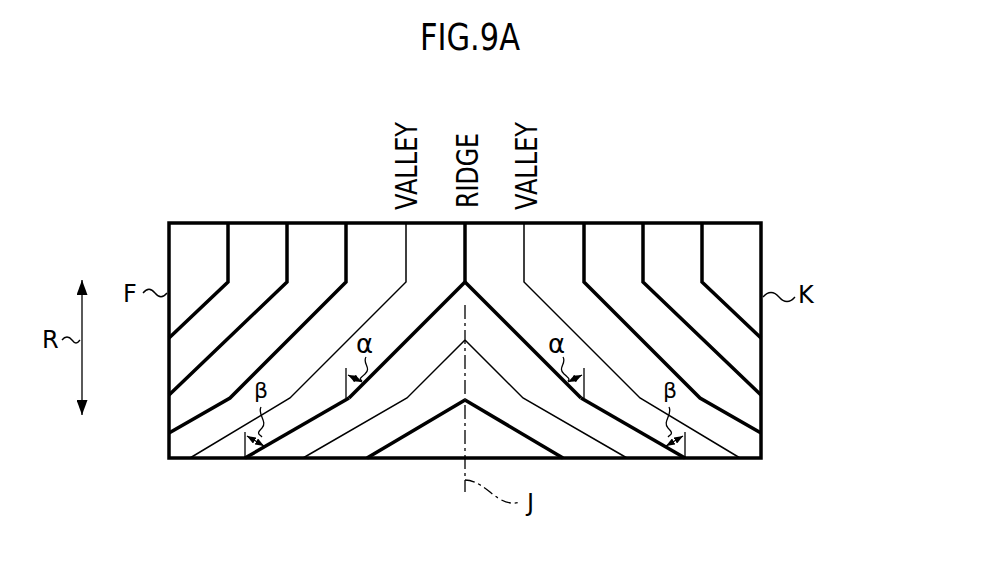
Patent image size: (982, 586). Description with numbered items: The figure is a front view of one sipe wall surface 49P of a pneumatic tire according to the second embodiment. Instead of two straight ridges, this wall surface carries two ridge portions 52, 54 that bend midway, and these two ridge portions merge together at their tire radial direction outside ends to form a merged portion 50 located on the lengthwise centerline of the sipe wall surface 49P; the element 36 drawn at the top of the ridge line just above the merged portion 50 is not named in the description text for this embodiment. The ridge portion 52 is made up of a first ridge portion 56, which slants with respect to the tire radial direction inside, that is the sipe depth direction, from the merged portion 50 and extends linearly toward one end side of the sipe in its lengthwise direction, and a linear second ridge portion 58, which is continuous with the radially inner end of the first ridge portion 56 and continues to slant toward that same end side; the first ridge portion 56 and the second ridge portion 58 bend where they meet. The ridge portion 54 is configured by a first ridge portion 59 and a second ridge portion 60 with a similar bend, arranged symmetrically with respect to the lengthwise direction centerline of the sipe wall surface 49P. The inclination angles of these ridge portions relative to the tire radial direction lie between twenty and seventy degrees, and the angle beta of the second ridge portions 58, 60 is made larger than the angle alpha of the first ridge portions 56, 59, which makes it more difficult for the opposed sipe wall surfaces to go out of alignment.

The sipe wall surface 49P is at (780, 158).
The ridge 36 is at (468, 241).
The merged portion 50 is at (470, 409).
The ridge portion 52 is at (333, 420).
The ridge portion 54 is at (601, 420).
The first ridge portion 56 is at (386, 358).
The second ridge portion 58 is at (288, 434).
The first ridge portion 59 is at (544, 358).
The second ridge portion 60 is at (642, 434).